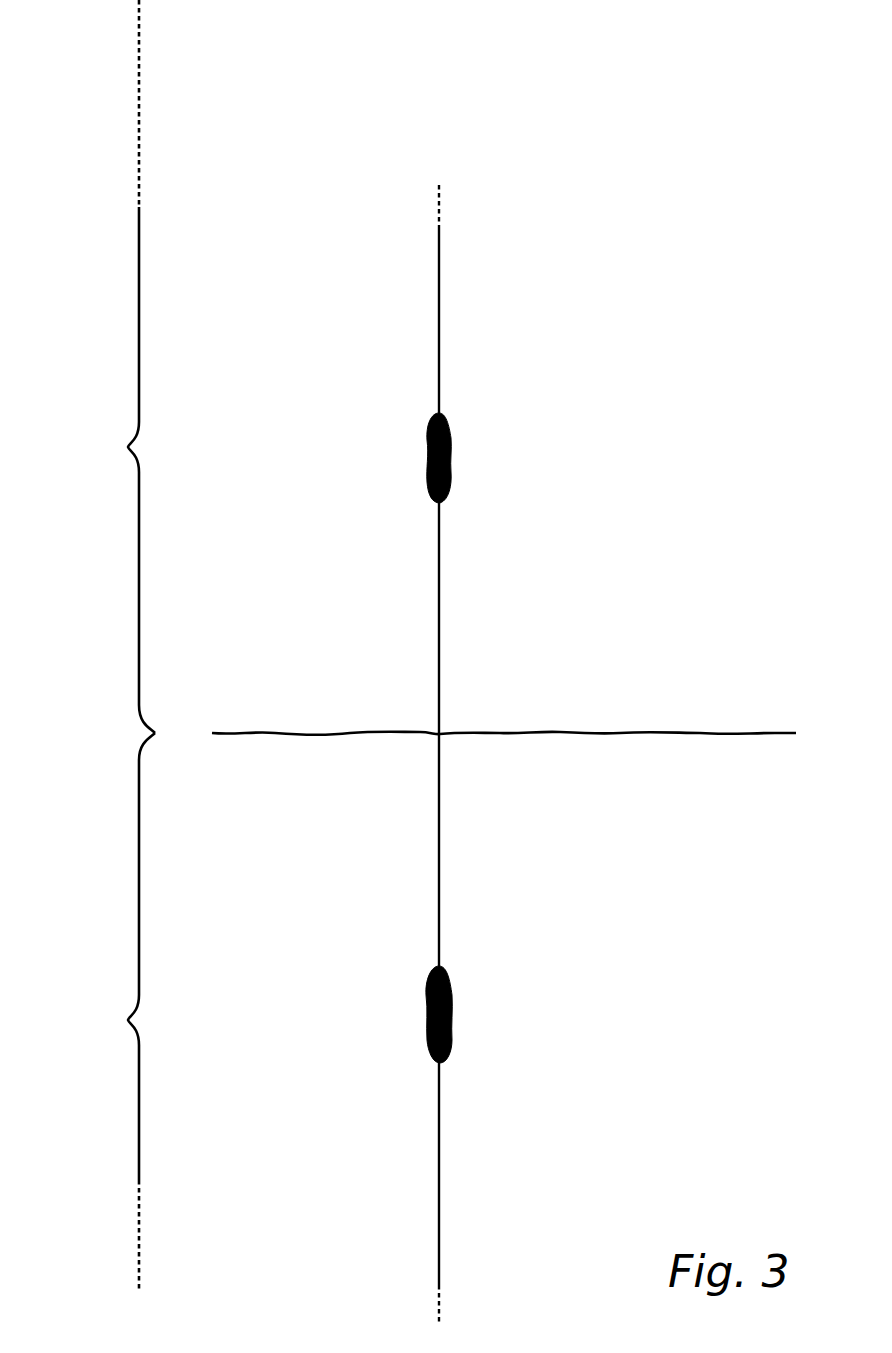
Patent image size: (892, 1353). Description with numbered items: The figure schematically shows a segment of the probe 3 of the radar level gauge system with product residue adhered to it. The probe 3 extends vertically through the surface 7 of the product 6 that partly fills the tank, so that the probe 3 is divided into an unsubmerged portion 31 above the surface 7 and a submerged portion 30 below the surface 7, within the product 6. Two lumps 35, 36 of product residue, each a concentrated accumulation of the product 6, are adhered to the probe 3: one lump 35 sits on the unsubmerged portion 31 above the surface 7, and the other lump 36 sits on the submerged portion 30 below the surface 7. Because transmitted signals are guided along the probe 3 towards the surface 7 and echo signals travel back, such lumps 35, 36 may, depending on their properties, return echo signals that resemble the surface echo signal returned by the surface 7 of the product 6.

The probe 3 is at (440, 316).
The surface 7 is at (615, 733).
The product 6 is at (643, 894).
The submerged portion 30 is at (119, 956).
The unsubmerged portion 31 is at (120, 470).
The lump 35 is at (450, 460).
The lump 36 is at (452, 1010).